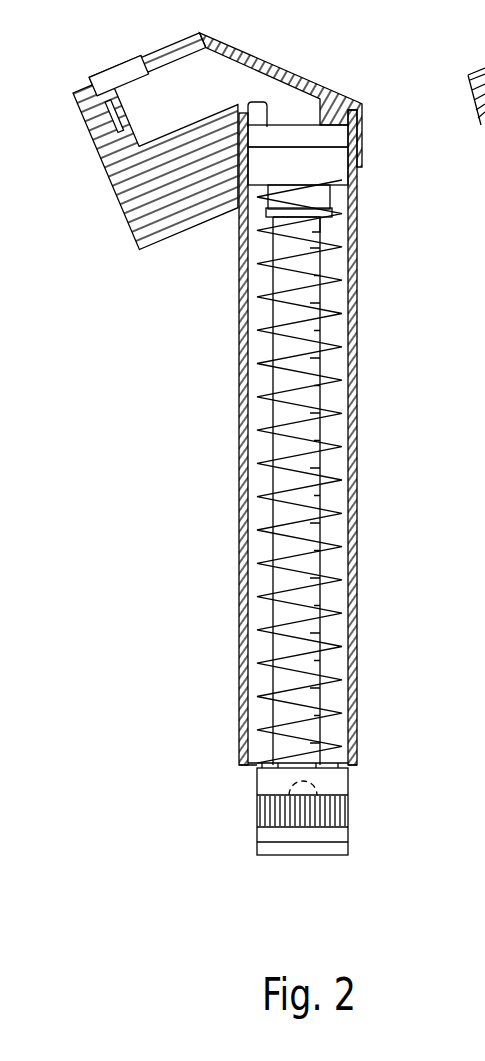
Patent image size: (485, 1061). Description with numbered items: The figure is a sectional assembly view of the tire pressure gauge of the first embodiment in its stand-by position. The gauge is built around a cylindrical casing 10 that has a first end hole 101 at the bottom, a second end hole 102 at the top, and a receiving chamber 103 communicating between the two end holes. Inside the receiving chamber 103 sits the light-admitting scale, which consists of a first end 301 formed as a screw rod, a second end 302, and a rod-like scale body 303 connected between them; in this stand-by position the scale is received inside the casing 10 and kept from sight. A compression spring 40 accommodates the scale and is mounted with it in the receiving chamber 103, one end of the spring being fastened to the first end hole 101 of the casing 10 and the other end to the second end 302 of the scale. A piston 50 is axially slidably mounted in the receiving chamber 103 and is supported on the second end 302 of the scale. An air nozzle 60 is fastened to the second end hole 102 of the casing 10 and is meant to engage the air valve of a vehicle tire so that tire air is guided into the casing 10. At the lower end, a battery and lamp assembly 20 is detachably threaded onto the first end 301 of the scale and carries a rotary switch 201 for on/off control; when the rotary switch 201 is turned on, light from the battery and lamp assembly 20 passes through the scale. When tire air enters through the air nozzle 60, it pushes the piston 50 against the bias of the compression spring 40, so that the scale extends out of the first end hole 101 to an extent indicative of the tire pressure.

The cylindrical casing 10 is at (210, 453).
The battery and lamp assembly 20 is at (347, 850).
The rotary switch 201 is at (347, 808).
The compression spring 40 is at (322, 380).
The piston 50 is at (330, 177).
The air nozzle 60 is at (107, 63).
The first end hole 101 is at (247, 768).
The second end hole 102 is at (359, 103).
The receiving chamber 103 is at (257, 553).
The first end 301 is at (310, 770).
The second end 302 is at (320, 229).
The rod-like scale body 303 is at (322, 533).